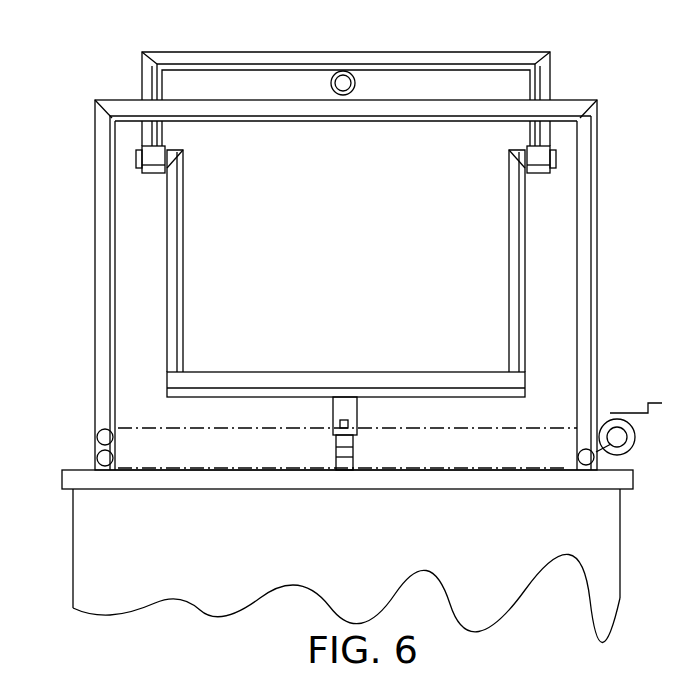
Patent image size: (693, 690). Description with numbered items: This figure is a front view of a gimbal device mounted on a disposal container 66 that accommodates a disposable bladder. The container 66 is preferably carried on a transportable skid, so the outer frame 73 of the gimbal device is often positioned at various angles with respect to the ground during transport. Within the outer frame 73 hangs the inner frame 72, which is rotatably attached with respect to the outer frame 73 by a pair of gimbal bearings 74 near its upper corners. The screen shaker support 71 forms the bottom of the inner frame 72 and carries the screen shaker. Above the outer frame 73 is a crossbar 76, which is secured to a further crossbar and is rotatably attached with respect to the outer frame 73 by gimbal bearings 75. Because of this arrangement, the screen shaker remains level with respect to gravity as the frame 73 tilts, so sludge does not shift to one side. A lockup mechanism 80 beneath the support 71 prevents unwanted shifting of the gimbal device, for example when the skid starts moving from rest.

The container 66 is at (431, 561).
The screen shaker support 71 is at (397, 372).
The frame 72 is at (183, 300).
The frame 73 is at (93, 240).
The gimbal bearings 74 is at (160, 148).
The gimbal bearings 75 is at (352, 78).
The crossbar 76 is at (502, 58).
The lockup mechanism 80 is at (357, 450).